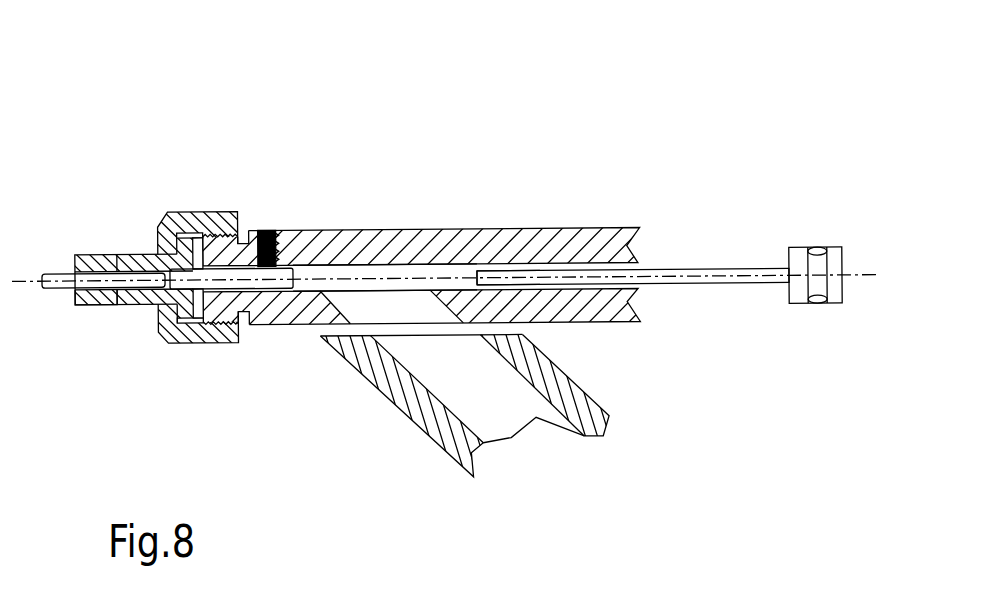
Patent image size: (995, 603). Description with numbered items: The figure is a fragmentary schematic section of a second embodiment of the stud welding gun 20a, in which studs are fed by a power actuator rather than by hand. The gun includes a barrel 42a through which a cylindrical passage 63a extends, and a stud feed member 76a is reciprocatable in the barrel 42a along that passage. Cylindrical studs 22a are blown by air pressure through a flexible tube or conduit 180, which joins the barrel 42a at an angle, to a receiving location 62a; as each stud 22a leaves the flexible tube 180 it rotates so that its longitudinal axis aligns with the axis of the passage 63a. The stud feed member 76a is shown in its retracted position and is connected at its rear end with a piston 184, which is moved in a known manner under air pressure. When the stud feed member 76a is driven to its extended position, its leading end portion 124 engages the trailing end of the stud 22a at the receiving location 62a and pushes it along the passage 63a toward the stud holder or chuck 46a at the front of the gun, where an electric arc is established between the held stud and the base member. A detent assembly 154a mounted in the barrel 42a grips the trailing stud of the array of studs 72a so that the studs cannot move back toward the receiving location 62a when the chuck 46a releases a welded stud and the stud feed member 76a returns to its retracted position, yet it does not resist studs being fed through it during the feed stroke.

The stud welding gun 20a is at (537, 110).
The studs 22a is at (52, 287).
The barrel 42a is at (367, 252).
The stud holder or chuck 46a is at (125, 303).
The receiving location 62a is at (383, 282).
The cylindrical passage 63a is at (431, 268).
The array of studs 72a is at (128, 258).
The stud feed member 76a is at (697, 268).
The leading end portion 124 is at (493, 275).
The detent assembly 154a is at (277, 228).
The flexible tube or conduit 180 is at (457, 443).
The piston 184 is at (818, 265).